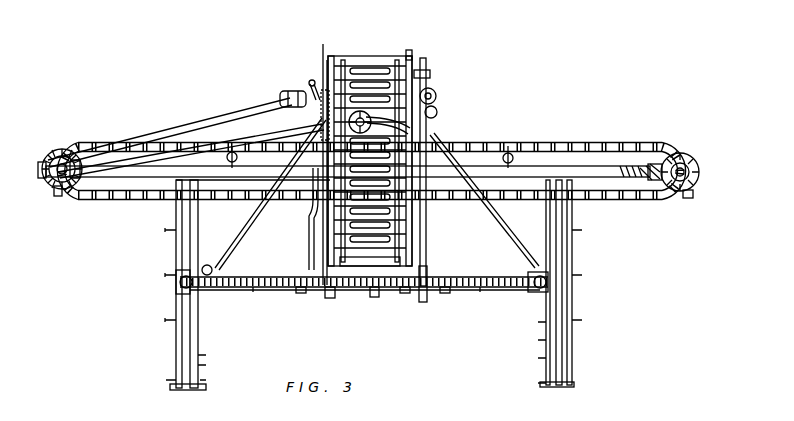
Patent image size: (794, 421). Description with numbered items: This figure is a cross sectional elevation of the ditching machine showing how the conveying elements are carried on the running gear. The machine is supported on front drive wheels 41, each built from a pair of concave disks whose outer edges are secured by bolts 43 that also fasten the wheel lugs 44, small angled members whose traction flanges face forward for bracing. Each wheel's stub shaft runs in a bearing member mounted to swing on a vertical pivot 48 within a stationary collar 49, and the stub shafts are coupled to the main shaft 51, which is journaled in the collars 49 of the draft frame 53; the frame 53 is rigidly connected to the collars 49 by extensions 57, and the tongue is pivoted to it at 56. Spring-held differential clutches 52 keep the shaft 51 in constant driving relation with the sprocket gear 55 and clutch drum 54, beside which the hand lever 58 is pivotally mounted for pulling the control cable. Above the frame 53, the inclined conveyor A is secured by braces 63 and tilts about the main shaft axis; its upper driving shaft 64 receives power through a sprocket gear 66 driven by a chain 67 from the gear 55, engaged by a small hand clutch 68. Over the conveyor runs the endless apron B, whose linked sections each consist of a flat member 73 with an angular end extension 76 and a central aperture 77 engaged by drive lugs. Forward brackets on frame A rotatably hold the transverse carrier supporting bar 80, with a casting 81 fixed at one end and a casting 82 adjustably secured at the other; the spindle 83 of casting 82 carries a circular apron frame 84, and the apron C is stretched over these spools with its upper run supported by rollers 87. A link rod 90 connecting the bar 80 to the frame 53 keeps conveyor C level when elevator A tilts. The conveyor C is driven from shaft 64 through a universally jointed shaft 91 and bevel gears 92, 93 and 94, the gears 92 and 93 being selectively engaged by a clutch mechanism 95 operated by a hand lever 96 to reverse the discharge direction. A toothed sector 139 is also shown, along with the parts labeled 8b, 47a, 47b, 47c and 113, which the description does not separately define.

The inclined conveyor A is at (488, 143).
The endless apron or carrier B is at (378, 62).
The apron C is at (115, 140).
The frame bar 8b is at (253, 185).
The front drive wheel 41 is at (175, 305).
The bolt 43 is at (204, 360).
The wheel lug 44 is at (196, 390).
The conveyor section 47a is at (185, 266).
The conveyor section 47b is at (297, 276).
The conveyor section 47c is at (465, 275).
The vertical pivot 48 is at (208, 262).
The stationary collar 49 is at (217, 290).
The main shaft 51 is at (350, 292).
The spring-held differential clutch 52 is at (300, 292).
The draft frame 53 is at (405, 293).
The clutch drum 54 is at (330, 298).
The sprocket gear 55 is at (424, 302).
The tongue pivot connection 56 is at (375, 297).
The extension 57 is at (253, 292).
The hand lever 58 is at (324, 60).
The brace 63 is at (240, 246).
The upper driving shaft 64 is at (437, 110).
The sprocket gear 66 is at (434, 92).
The chain 67 is at (428, 136).
The hand clutch 68 is at (424, 72).
The flat member 73 is at (392, 212).
The angular end extension 76 is at (410, 60).
The central aperture 77 is at (361, 68).
The transverse carrier supporting bar 80 is at (597, 165).
The casting 81 is at (42, 178).
The casting 82 is at (654, 182).
The spindle 83 is at (697, 168).
The circular apron frame 84 is at (688, 200).
The roller 87 is at (231, 146).
The link rod 90 is at (310, 220).
The universally jointed shaft 91 is at (253, 110).
The bevel gear 92 is at (78, 160).
The bevel gear 93 is at (57, 150).
The bevel gear 94 is at (59, 196).
The clutch mechanism 95 is at (63, 163).
The hand lever 96 is at (311, 80).
The arm 113 is at (318, 128).
The toothed sector 139 is at (292, 92).